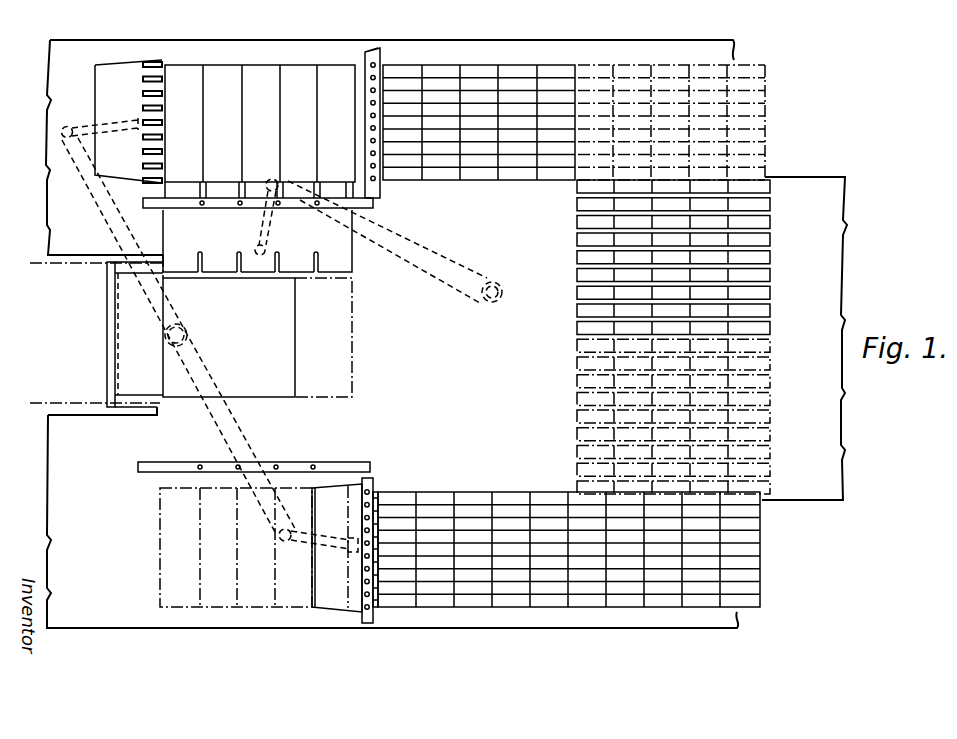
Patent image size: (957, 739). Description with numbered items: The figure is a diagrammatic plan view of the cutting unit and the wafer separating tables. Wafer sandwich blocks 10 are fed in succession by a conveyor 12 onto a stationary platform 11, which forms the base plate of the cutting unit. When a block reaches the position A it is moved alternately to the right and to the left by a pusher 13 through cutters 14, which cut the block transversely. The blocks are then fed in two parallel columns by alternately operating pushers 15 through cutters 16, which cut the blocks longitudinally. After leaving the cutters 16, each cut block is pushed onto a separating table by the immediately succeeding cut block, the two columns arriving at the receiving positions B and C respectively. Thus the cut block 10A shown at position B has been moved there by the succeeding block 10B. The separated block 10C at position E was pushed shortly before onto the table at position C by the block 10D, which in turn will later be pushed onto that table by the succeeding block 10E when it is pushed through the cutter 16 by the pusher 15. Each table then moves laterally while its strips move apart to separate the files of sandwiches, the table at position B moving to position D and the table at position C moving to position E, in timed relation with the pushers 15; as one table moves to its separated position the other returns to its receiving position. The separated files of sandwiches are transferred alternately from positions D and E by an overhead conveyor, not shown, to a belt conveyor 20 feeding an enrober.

The wafer sandwich block 10 is at (222, 343).
The cut block 10A is at (745, 581).
The succeeding block 10B is at (478, 492).
The separated block 10C is at (577, 276).
The block 10D is at (506, 173).
The succeeding block 10E is at (268, 62).
The stationary platform 11 is at (47, 443).
The conveyor 12 is at (63, 403).
The pusher 13 is at (352, 261).
The cutters 14 is at (373, 207).
The pushers 15 is at (95, 95).
The cutters 16 is at (378, 50).
The belt conveyor 20 is at (843, 449).
The position A is at (356, 348).
The position B is at (771, 567).
The position C is at (669, 62).
The position D is at (773, 407).
The position E is at (775, 271).